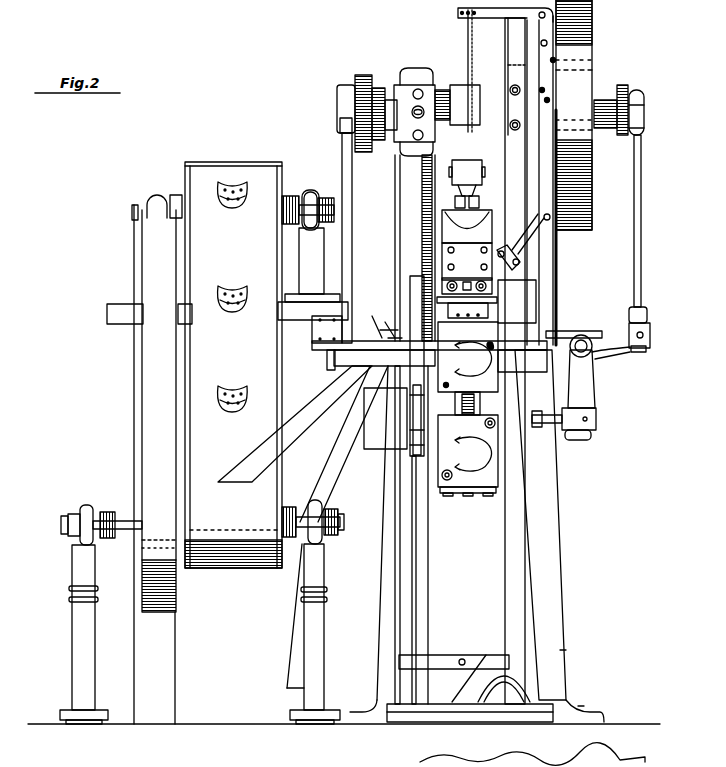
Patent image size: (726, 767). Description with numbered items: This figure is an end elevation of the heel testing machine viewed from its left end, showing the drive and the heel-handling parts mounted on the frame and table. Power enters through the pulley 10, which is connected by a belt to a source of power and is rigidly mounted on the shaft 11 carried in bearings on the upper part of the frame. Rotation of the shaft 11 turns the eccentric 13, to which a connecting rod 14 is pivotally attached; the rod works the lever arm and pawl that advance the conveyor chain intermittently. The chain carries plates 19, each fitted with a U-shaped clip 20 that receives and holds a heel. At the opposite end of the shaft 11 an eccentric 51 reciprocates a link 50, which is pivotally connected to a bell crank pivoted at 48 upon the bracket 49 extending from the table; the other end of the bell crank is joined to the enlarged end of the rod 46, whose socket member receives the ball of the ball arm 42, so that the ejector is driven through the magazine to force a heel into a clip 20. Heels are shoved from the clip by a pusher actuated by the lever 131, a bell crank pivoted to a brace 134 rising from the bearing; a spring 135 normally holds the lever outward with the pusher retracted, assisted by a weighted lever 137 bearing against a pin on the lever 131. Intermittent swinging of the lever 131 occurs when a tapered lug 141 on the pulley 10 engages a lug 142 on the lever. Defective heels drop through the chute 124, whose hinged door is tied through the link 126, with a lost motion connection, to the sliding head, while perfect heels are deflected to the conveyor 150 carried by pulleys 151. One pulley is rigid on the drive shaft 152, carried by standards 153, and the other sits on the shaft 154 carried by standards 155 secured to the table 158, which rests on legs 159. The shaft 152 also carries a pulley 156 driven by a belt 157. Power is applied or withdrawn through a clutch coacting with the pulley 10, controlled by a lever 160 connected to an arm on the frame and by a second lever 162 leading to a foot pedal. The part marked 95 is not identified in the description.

The pulley 10 is at (588, 42).
The shaft 11 is at (605, 100).
The eccentric 13 is at (362, 75).
The connecting rod 14 is at (352, 204).
The plates 19 is at (500, 480).
The U-shaped clip 20 is at (472, 437).
The ball arm 42 is at (590, 396).
The rod 46 is at (562, 432).
The bell crank pivot 48 is at (592, 355).
The bracket 49 is at (560, 346).
The link 50 is at (642, 262).
The eccentric 51 is at (628, 88).
The table 95 is at (549, 753).
The chute 124 is at (332, 482).
The link 126 is at (298, 406).
The lever 131 is at (554, 274).
The brace 134 is at (474, 54).
The spring 135 is at (466, 42).
The weighted lever 137 is at (534, 238).
The tapered lug 141 is at (554, 60).
The lug 142 is at (556, 97).
The conveyor 150 is at (237, 166).
The pulleys 151 is at (282, 162).
The drive shaft 152 is at (128, 536).
The standards 153 is at (80, 632).
The shaft 154 is at (306, 206).
The standards 155 is at (318, 260).
The pulley 156 is at (182, 590).
The belt 157 is at (148, 412).
The table 158 is at (116, 306).
The legs 159 is at (168, 682).
The lever 160 is at (586, 390).
The second lever 162 is at (560, 520).